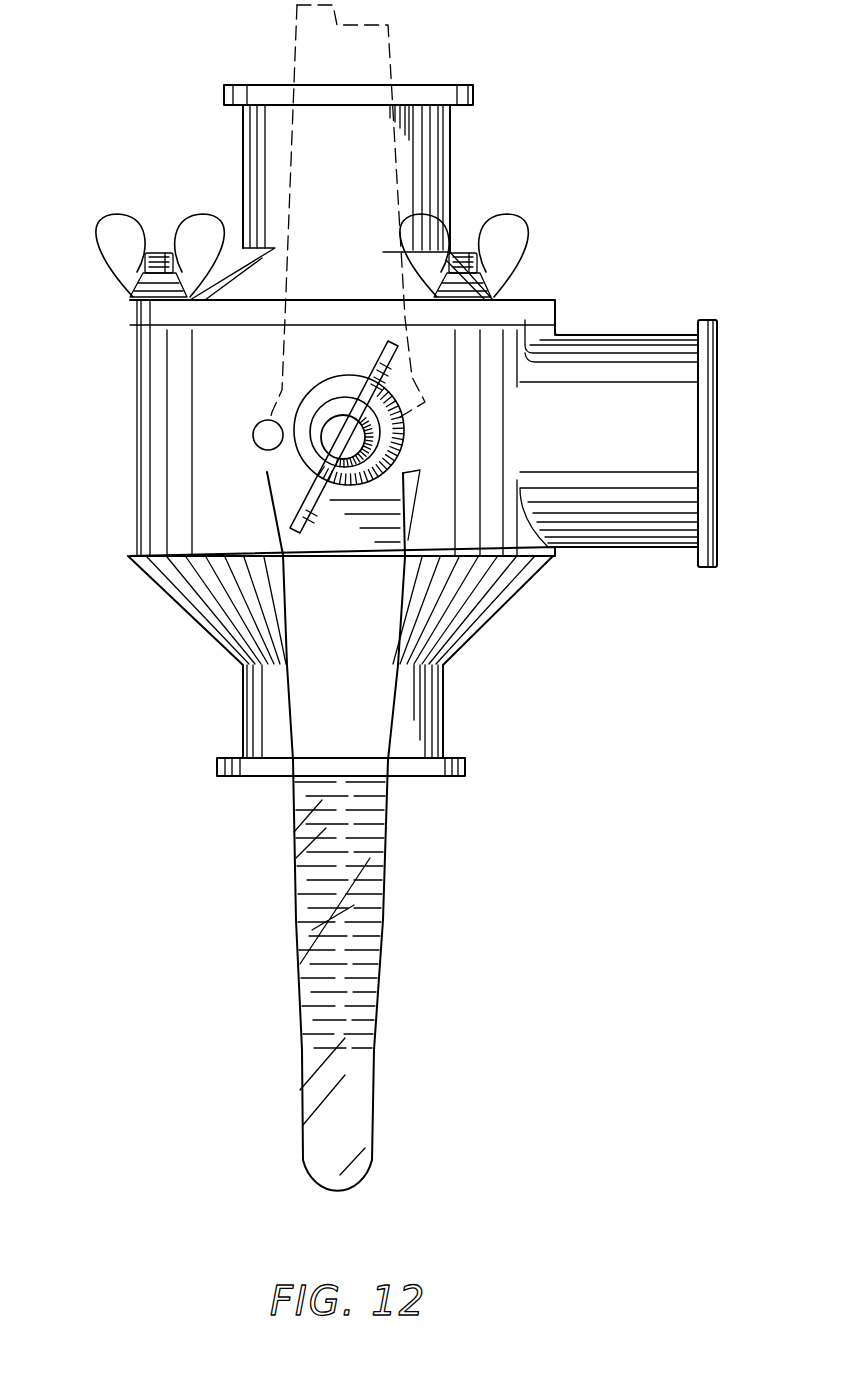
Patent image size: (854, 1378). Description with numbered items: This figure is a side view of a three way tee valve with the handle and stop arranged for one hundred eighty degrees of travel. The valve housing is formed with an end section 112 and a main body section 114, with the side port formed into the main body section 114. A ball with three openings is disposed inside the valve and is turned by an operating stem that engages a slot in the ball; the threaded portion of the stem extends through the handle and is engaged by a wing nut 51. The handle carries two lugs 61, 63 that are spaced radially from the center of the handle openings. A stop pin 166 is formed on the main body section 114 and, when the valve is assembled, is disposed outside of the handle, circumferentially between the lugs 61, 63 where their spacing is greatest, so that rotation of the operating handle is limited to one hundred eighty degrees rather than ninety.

The end section 112 is at (530, 300).
The main body section 114 is at (130, 523).
The stop pin 166 is at (257, 436).
The lug 61 is at (268, 466).
The lug 63 is at (420, 470).
The wing nut 51 is at (312, 514).